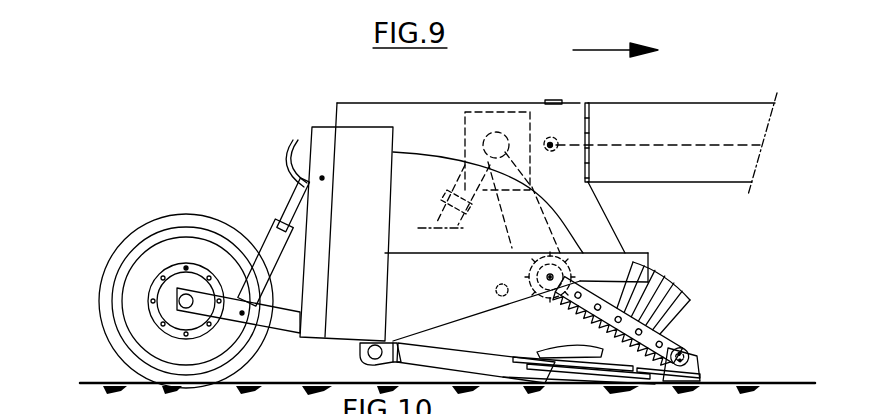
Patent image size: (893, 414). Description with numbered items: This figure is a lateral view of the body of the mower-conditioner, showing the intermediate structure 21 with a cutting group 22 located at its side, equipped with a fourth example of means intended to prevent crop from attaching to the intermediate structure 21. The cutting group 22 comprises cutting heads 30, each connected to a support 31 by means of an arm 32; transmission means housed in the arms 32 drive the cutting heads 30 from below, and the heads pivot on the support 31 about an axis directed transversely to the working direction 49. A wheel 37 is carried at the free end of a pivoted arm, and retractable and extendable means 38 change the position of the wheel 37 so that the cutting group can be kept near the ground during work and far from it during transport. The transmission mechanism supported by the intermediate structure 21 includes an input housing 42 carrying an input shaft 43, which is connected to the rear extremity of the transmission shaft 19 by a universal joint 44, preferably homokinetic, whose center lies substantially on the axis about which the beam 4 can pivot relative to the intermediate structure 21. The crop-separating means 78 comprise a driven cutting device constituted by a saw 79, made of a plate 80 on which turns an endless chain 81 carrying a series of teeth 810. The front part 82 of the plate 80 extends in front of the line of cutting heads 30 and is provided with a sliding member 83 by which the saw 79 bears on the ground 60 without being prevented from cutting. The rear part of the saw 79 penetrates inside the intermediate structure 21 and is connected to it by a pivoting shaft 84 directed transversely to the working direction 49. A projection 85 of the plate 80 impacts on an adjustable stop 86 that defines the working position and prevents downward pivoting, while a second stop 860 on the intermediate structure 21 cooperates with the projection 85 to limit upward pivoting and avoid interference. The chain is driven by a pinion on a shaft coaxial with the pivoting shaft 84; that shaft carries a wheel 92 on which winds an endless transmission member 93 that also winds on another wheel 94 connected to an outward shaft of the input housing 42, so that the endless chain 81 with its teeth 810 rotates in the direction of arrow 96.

The beam 4 is at (740, 122).
The transmission shaft 19 is at (685, 143).
The intermediate structure 21 is at (358, 115).
The cutting group 22 is at (634, 398).
The cutting head 30 is at (548, 341).
The support 31 is at (360, 345).
The arm 32 is at (498, 365).
The wheel 37 is at (117, 263).
The retractable and extendable means 38 is at (293, 230).
The input housing 42 is at (475, 128).
The input shaft 43 is at (533, 142).
The universal joint 44 is at (557, 147).
The working direction 49 is at (592, 47).
The ground 60 is at (589, 405).
The separating means 78 is at (735, 266).
The saw 79 is at (688, 315).
The plate 80 is at (681, 318).
The endless chain 81 is at (630, 253).
The teeth 810 is at (650, 318).
The front part 82 is at (738, 320).
The sliding member 83 is at (693, 381).
The pivoting shaft 84 is at (548, 291).
The projection 85 is at (510, 254).
The stop 86 is at (511, 247).
The second stop 860 is at (498, 284).
The wheel 92 is at (520, 297).
The endless transmission member 93 is at (563, 251).
The wheel 94 is at (497, 143).
The arrow 96 is at (706, 332).